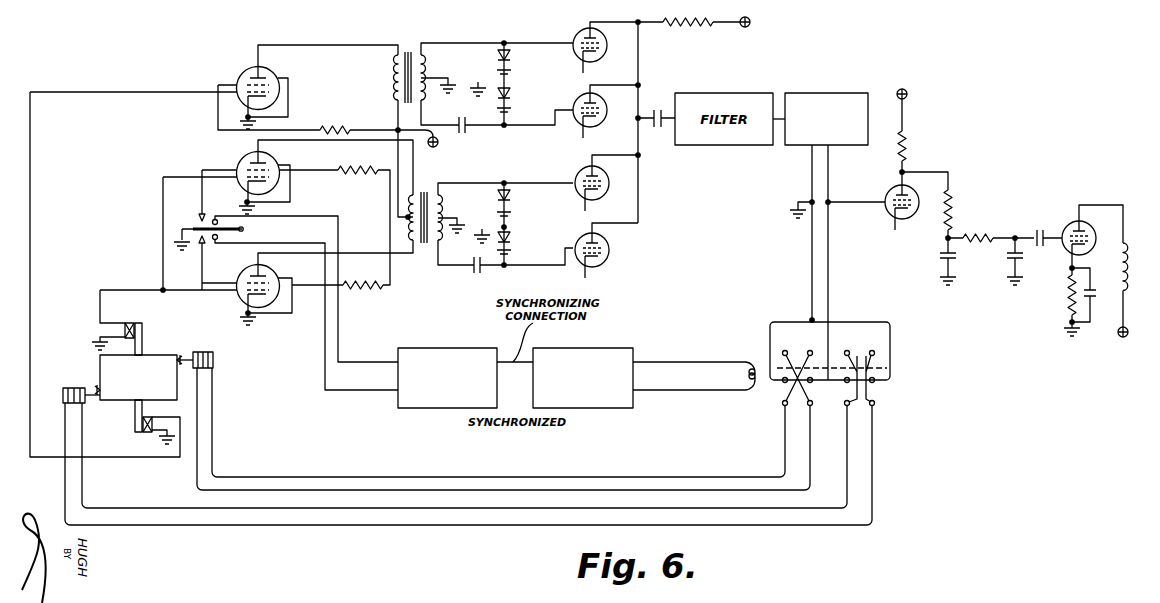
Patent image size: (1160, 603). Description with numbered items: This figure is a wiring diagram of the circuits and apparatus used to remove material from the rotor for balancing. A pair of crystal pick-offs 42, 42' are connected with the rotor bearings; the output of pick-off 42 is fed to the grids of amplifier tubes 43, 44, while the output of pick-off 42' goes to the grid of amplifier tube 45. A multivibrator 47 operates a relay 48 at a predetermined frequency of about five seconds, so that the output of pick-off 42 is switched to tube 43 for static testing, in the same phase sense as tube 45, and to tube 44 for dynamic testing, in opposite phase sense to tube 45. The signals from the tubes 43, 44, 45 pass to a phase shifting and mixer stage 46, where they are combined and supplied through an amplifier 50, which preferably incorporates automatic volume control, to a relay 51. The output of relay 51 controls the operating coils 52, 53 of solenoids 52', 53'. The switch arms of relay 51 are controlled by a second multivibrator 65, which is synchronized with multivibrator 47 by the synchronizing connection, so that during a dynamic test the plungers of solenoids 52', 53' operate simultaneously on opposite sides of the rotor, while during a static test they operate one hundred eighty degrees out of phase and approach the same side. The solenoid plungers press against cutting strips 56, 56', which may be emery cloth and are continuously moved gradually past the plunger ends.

The crystal pick-off 42 is at (136, 325).
The crystal pick-off 42' is at (126, 427).
The amplifier tube 43 is at (238, 165).
The amplifier tube 44 is at (239, 296).
The amplifier tube 45 is at (238, 74).
The phase shifting and mixer stage 46 is at (518, 160).
The multivibrator 47 is at (433, 347).
The relay 48 is at (198, 227).
The amplifier 50 is at (841, 93).
The relay 51 is at (885, 302).
The operating coil 52 is at (64, 379).
The solenoid 52' is at (101, 413).
The operating coil 53 is at (225, 357).
The solenoid 53' is at (192, 342).
The cutting strip 56 is at (76, 363).
The cutting strip 56' is at (165, 341).
The multivibrator 65 is at (613, 348).